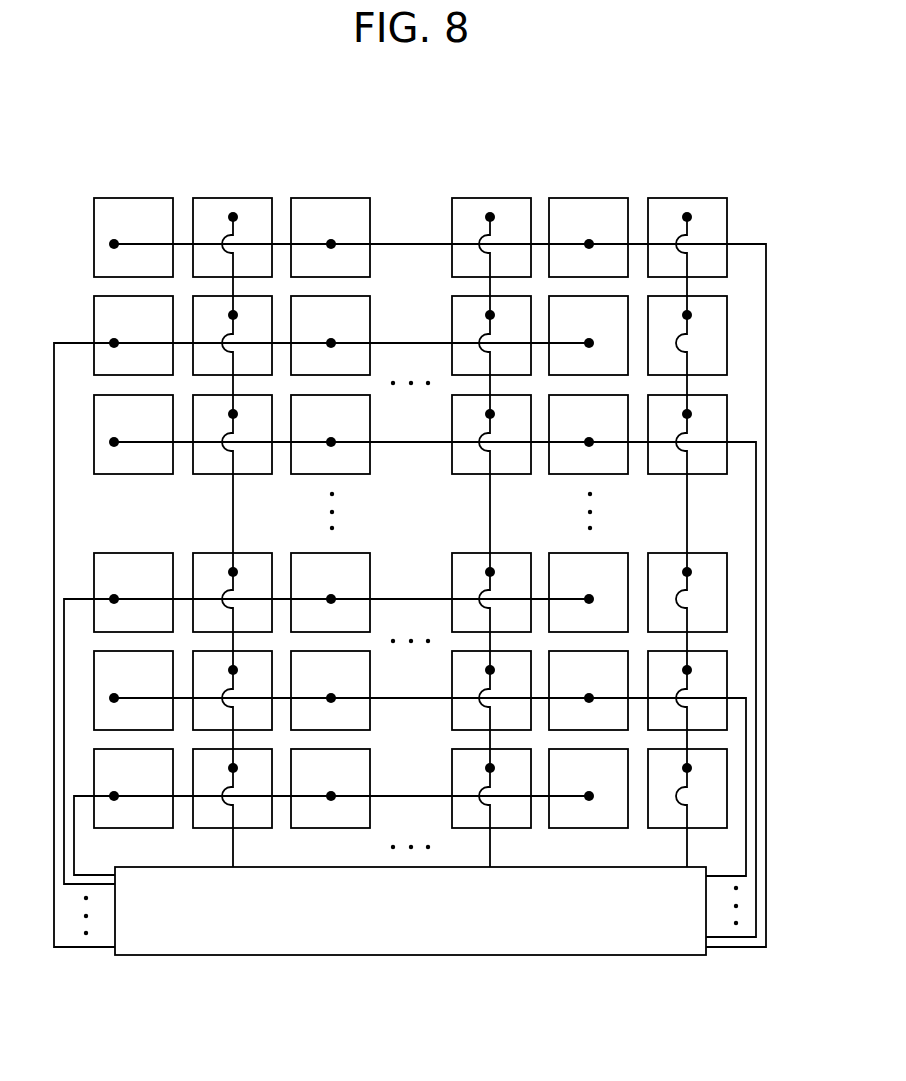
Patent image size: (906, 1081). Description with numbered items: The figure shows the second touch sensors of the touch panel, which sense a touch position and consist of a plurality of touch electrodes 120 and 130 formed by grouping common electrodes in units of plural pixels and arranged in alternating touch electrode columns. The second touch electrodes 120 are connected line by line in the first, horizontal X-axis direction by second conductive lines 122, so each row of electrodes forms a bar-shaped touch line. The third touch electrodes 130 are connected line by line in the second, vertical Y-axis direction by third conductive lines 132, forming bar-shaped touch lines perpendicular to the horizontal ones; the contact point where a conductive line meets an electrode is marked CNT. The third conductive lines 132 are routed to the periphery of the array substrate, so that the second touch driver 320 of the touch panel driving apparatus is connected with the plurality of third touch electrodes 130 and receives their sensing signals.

The second touch electrode 120 is at (133, 198).
The third touch electrode 130 is at (233, 198).
The second conductive line 122 is at (408, 243).
The third conductive line 132 is at (233, 509).
The contact CNT is at (688, 213).
The second touch driver 320 is at (425, 919).